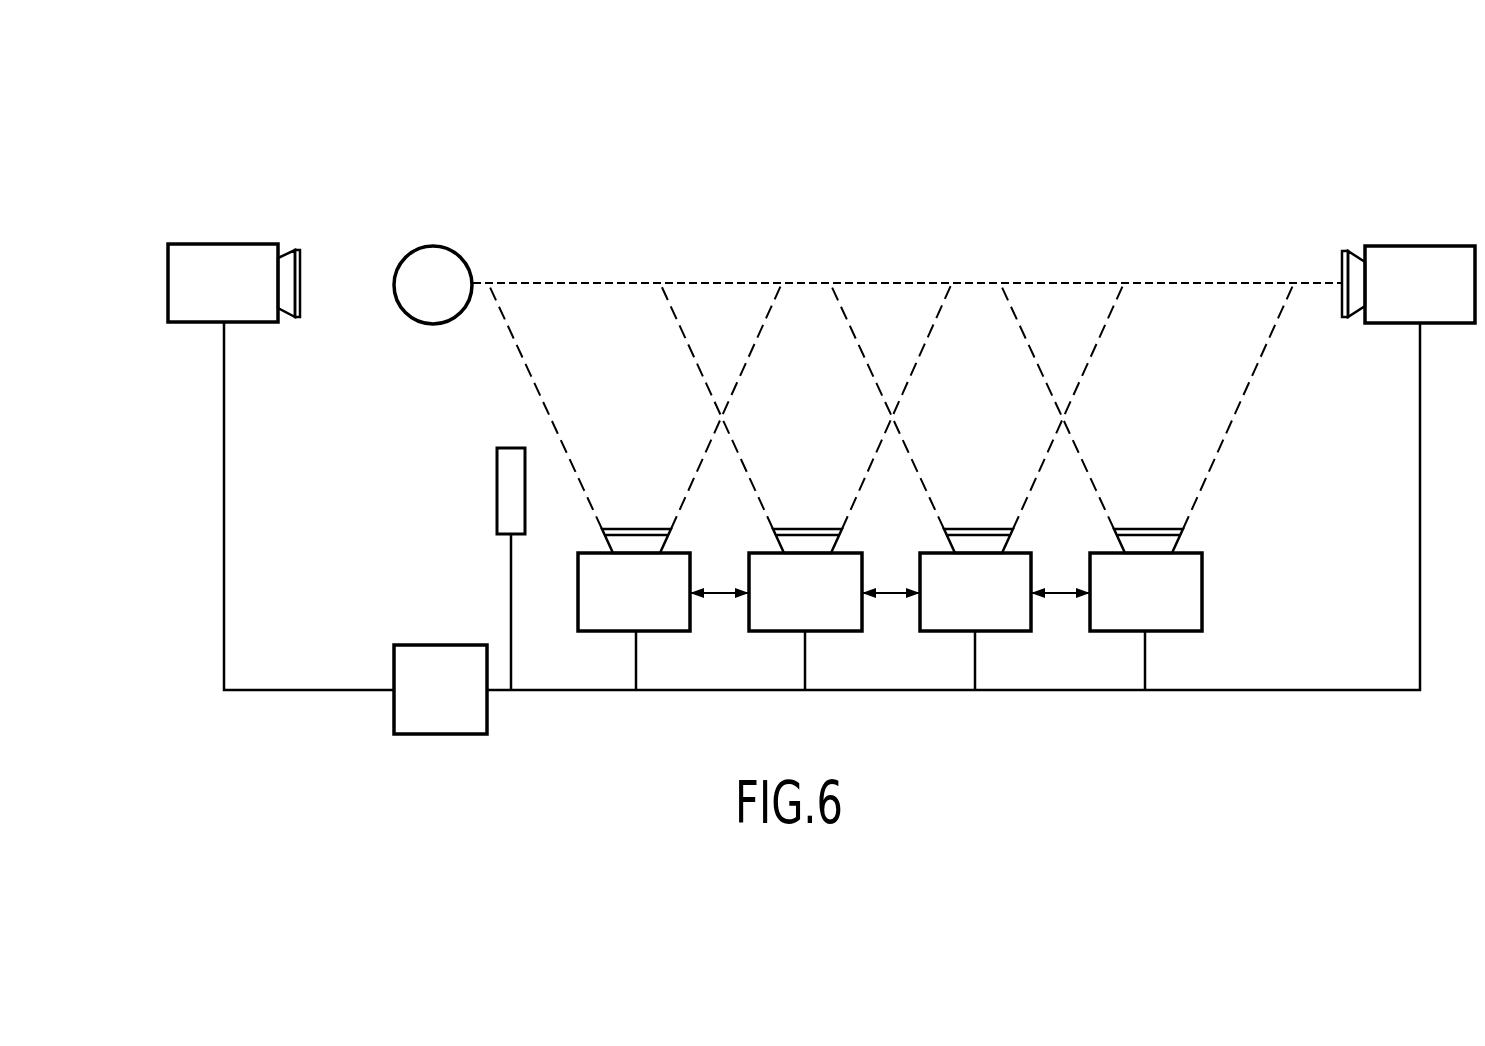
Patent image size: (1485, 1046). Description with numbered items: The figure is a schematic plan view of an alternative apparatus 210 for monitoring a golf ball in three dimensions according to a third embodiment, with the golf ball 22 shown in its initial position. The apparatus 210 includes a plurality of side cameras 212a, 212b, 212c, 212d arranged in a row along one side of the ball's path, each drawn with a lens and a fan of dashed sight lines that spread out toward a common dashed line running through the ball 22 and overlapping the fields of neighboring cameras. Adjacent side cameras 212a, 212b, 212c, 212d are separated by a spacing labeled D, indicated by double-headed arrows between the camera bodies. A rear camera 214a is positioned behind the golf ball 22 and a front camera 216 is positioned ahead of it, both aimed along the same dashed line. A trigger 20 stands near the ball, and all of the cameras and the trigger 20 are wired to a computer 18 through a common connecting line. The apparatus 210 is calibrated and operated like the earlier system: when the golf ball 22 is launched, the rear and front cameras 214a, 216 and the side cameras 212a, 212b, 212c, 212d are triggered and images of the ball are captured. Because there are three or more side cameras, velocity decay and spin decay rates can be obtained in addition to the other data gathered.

The apparatus 210 is at (938, 116).
The rear camera 214a is at (205, 244).
The front camera 216 is at (1396, 246).
The golf ball 22 is at (432, 246).
The trigger 20 is at (497, 483).
The computer 18 is at (487, 710).
The side camera 212a is at (677, 632).
The side camera 212b is at (823, 632).
The side camera 212c is at (997, 632).
The side camera 212d is at (1170, 632).
The projector spacing D is at (1057, 593).